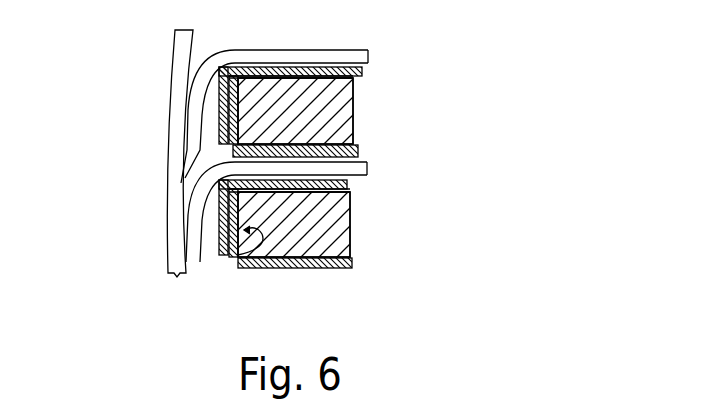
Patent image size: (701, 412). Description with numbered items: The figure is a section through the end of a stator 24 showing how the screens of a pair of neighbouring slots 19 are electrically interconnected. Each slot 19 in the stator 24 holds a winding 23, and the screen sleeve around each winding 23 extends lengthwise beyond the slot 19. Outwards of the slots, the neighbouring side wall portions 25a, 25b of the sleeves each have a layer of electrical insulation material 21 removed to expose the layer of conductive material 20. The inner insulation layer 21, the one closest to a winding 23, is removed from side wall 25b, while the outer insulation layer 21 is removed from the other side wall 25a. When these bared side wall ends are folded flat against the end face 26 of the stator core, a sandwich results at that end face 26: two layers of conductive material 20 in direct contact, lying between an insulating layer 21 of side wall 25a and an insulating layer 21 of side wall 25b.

The slot 19 is at (356, 146).
The layer of conductive material 20 is at (226, 119).
The layer of electrical insulation material 21 is at (220, 108).
The winding 23 is at (370, 51).
The stator 24 is at (307, 92).
The side wall portion 25a is at (362, 79).
The side wall portion 25b is at (360, 159).
The end face 26 is at (238, 255).